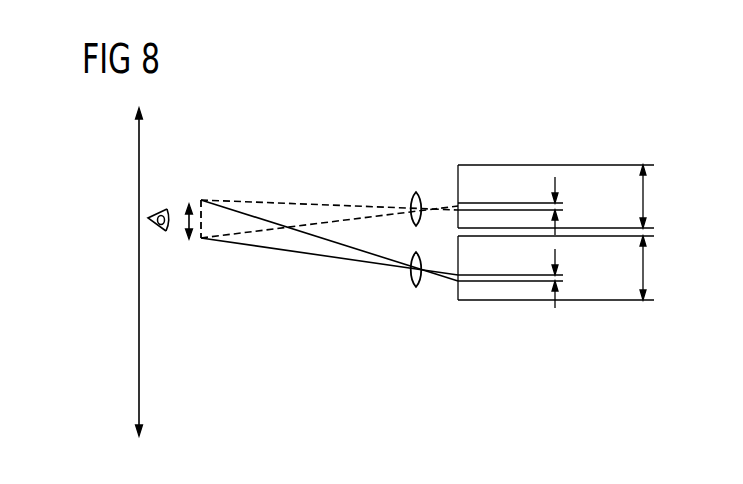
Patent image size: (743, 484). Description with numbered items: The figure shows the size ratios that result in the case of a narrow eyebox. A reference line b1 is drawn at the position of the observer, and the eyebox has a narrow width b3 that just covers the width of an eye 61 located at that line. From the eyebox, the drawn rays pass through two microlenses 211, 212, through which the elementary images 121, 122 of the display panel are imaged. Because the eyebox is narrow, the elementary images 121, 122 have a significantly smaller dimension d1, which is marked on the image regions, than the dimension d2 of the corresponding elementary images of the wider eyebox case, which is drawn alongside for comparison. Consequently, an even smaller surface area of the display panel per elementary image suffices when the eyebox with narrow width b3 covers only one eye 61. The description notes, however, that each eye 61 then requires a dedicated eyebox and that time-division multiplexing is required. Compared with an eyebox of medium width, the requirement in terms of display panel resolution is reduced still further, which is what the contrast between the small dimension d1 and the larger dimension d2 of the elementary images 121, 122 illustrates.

The viewing axis / reference plane b1 is at (139, 272).
The narrow width b3 is at (188, 218).
The eye 61 is at (158, 232).
The microlens 211 is at (413, 191).
The microlens 212 is at (416, 288).
The elementary image 121 is at (453, 211).
The elementary image 122 is at (453, 283).
The dimension d1 is at (555, 180).
The dimension d2 is at (644, 197).